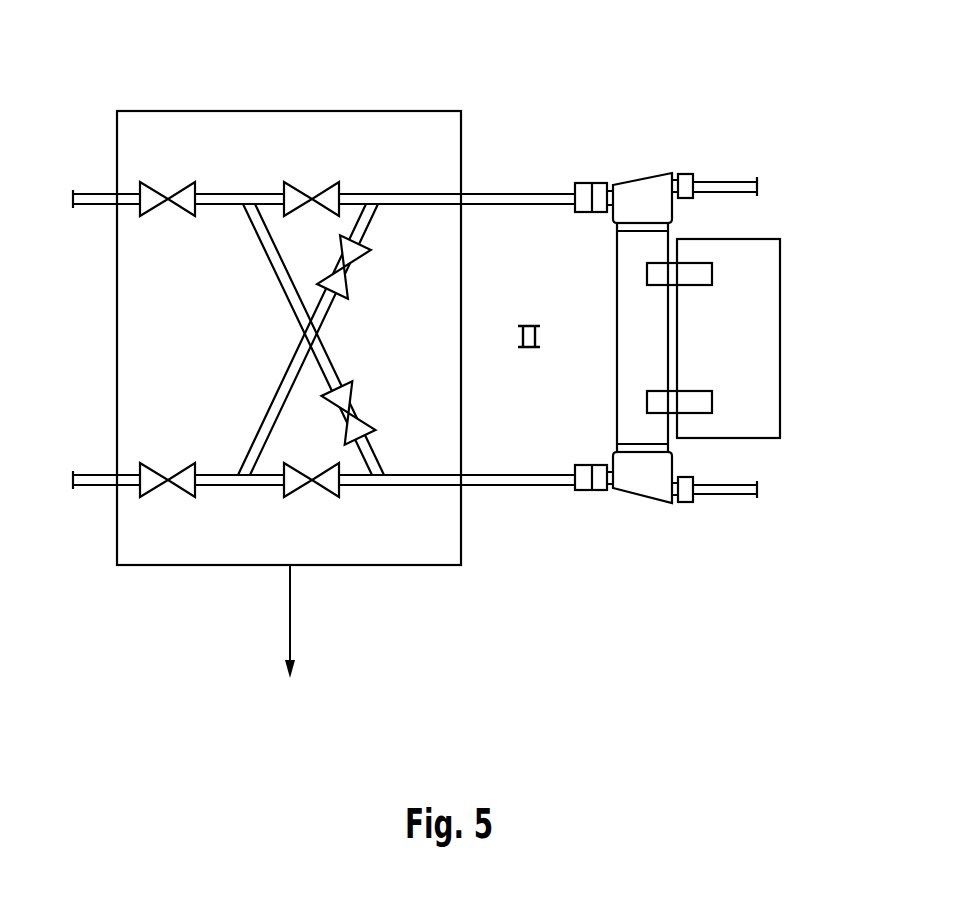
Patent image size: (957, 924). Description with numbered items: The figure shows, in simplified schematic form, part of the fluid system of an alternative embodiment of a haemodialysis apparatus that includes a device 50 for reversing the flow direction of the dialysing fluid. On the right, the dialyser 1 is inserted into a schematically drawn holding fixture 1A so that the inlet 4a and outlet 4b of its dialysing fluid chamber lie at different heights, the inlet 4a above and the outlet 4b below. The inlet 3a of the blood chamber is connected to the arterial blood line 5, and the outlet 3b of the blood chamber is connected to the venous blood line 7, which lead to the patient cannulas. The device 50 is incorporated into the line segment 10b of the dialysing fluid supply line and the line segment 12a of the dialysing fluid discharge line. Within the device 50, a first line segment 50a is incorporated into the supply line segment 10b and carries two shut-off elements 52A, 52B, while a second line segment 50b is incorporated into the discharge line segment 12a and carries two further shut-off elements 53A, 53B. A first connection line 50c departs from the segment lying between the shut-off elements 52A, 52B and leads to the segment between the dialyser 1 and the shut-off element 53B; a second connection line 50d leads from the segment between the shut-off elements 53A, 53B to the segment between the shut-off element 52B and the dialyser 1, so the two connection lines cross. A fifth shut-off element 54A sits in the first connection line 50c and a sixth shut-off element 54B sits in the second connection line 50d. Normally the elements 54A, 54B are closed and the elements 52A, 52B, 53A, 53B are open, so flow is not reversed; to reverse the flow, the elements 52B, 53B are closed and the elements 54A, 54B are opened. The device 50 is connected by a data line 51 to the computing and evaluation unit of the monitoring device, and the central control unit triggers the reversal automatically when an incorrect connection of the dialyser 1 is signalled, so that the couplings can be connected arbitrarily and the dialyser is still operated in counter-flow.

The dialyser 1 is at (614, 336).
The holding fixture 1A is at (780, 280).
The inlet of the blood chamber 3a is at (676, 503).
The outlet of the blood chamber 3b is at (675, 174).
The inlet of the dialysing fluid chamber 4a is at (611, 184).
The outlet of the dialysing fluid chamber 4b is at (615, 490).
The arterial blood line 5 is at (733, 496).
The venous blood line 7 is at (725, 182).
The line segment of the dialysing fluid supply line 10b is at (90, 194).
The line segment of the dialysing fluid discharge line 12a is at (87, 486).
The device for reversing the flow direction 50 is at (277, 110).
The first line segment 50a is at (358, 194).
The second line segment 50b is at (360, 486).
The first connection line 50c is at (283, 280).
The second connection line 50d is at (321, 324).
The data line 51 is at (292, 622).
The first shut-off element 52A is at (162, 186).
The second shut-off element 52B is at (302, 186).
The third shut-off element 53A is at (168, 495).
The fourth shut-off element 53B is at (306, 495).
The fifth shut-off element 54A is at (352, 400).
The sixth shut-off element 54B is at (352, 278).